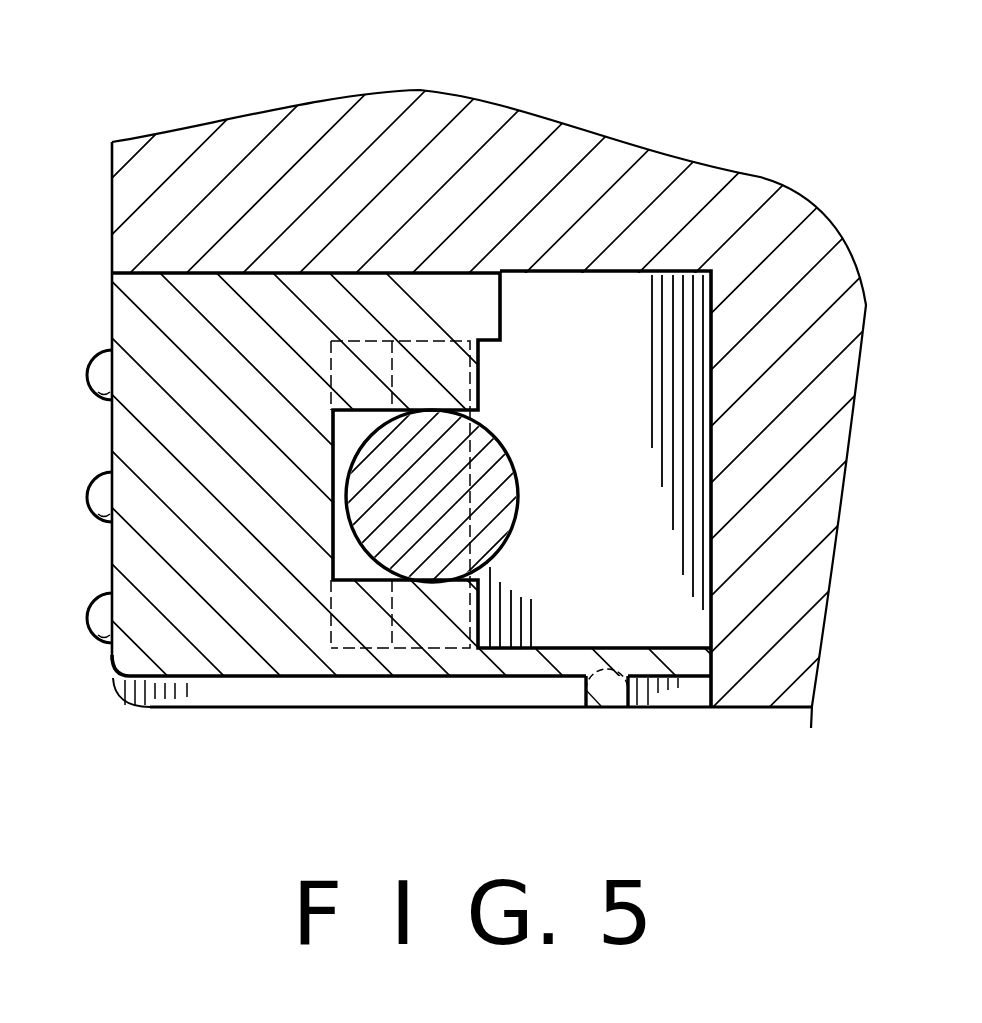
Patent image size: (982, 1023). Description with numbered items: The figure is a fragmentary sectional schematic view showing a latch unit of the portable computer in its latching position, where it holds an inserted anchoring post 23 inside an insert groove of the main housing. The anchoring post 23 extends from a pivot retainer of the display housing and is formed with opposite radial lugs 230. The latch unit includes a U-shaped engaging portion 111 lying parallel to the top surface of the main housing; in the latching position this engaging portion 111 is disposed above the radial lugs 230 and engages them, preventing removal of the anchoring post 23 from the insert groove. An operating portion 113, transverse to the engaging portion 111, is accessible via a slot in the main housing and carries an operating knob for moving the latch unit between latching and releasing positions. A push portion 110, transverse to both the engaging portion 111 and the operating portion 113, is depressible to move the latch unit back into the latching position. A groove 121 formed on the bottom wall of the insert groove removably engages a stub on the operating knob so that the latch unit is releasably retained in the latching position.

The push portion 110 is at (110, 552).
The engaging portion 111 is at (480, 387).
The operating portion 113 is at (483, 665).
The groove 121 is at (607, 693).
The anchoring post 23 is at (380, 513).
The radial lugs 230 is at (428, 627).